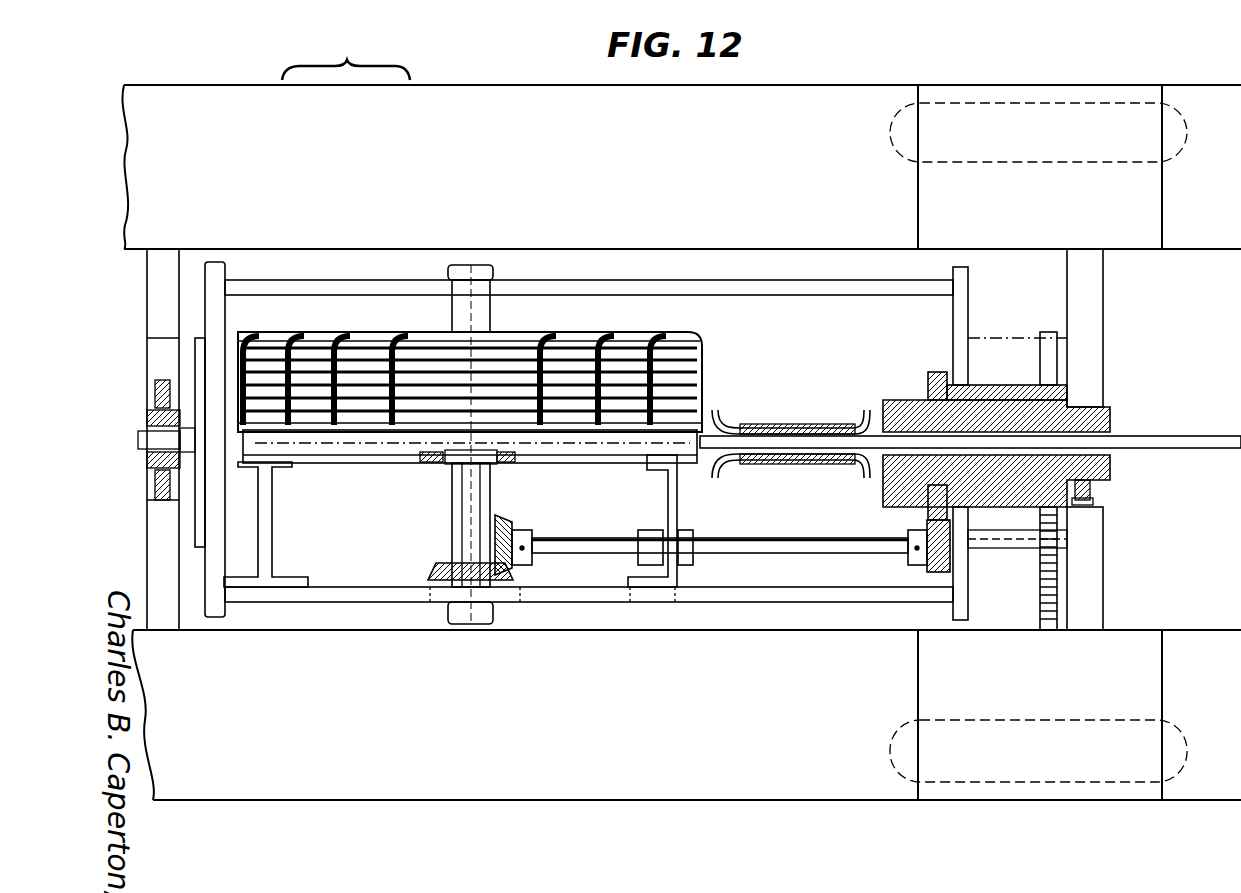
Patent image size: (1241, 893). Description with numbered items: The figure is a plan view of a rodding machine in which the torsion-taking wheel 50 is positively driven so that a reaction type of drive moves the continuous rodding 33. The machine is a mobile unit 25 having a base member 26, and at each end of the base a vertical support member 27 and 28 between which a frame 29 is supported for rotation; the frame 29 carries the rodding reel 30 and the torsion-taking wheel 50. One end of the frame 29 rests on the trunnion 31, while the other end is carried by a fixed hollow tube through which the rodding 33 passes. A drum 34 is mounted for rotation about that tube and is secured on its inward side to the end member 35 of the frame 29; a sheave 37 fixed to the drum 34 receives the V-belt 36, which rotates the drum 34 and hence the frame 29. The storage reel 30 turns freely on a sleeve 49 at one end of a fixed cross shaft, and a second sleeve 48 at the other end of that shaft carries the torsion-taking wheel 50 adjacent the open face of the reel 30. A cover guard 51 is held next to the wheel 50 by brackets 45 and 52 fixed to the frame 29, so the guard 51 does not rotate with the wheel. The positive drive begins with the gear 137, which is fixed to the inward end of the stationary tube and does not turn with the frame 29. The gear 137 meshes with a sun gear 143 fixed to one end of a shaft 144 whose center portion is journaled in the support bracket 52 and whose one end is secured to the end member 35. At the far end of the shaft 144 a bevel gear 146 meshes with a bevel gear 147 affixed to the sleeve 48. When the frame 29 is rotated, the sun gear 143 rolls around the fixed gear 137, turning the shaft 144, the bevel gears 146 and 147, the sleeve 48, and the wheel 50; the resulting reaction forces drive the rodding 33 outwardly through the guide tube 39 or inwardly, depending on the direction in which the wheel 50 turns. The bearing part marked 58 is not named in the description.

The mobile unit 25 is at (346, 55).
The base member 26 is at (527, 105).
The vertical support member 27 is at (153, 350).
The vertical support member 28 is at (1087, 410).
The frame 29 is at (659, 273).
The rodding reel 30 is at (703, 343).
The trunnion 31 is at (138, 440).
The continuous rodding 33 is at (880, 447).
The drum 34 is at (977, 405).
The end member 35 is at (962, 284).
The V-belt 36 is at (1040, 592).
The sheave 37 is at (1044, 385).
The guide tube 39 is at (791, 441).
The bracket 45 is at (272, 545).
The second sleeve 48 is at (490, 495).
The sleeve 49 is at (493, 313).
The torsion-taking wheel 50 is at (442, 455).
The cover guard 51 is at (330, 460).
The support bracket 52 is at (668, 505).
The bearing 58 is at (392, 455).
The gear 137 is at (940, 372).
The sun gear 143 is at (920, 562).
The shaft 144 is at (755, 545).
The bevel gear 146 is at (515, 527).
The bevel gear 147 is at (438, 578).